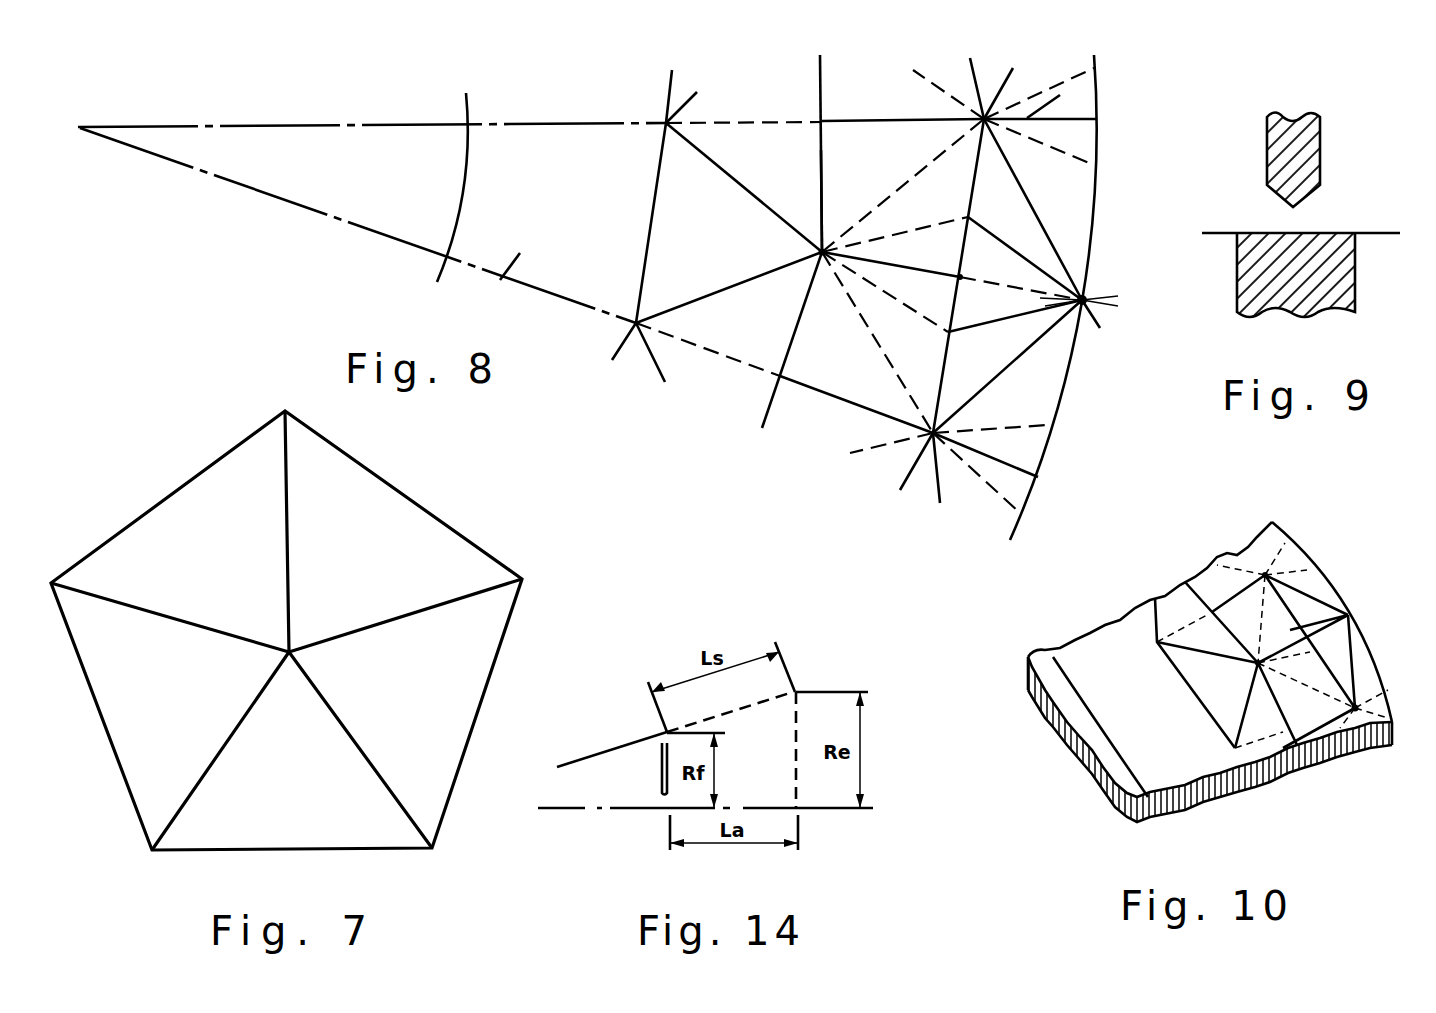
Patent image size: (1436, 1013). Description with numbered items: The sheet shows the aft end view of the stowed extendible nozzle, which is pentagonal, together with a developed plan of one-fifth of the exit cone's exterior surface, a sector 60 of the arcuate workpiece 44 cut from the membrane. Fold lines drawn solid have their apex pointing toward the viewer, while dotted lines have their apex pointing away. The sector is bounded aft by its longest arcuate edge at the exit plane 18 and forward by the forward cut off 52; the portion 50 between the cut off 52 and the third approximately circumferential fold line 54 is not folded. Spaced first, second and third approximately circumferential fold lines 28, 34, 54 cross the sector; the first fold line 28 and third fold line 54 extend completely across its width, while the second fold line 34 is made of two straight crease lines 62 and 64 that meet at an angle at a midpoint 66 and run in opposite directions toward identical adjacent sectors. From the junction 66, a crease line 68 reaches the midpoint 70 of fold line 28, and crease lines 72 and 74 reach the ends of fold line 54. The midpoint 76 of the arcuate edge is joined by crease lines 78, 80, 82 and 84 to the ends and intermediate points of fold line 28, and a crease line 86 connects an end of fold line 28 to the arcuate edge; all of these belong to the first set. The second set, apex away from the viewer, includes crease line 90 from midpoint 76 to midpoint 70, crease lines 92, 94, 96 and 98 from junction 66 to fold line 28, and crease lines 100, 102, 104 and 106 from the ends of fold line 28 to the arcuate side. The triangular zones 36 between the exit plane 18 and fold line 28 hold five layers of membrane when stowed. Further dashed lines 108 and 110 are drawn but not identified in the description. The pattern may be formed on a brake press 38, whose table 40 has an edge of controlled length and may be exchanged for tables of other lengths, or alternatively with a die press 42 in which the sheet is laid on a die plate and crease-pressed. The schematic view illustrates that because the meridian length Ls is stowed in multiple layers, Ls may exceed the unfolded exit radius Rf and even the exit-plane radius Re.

In FIG. 8, the exit plane 18 is at (1100, 228).
In FIG. 8, the first approximately circumferential fold line 28 is at (968, 74).
In FIG. 8, the second approximately circumferential fold line 34 is at (822, 180).
In FIG. 8, the triangular zones 36 is at (1096, 308).
In FIG. 8, the brake press 38 is at (1053, 103).
In FIG. 9, the brake press 38 is at (1248, 216).
In FIG. 9, the table 40 is at (1345, 282).
In FIG. 10, the die press 42 is at (1125, 597).
In FIG. 9, the workpiece 44 is at (1368, 233).
In FIG. 10, the workpiece 44 is at (1213, 583).
In FIG. 8, the unfolded portion of cone 50 is at (358, 225).
In FIG. 8, the forward cut off 52 is at (462, 190).
In FIG. 8, the third approximately circumferential fold line 54 is at (657, 94).
In FIG. 8, the sector 60 is at (680, 398).
In FIG. 8, the crease line 62 is at (820, 157).
In FIG. 8, the crease line 64 is at (795, 327).
In FIG. 8, the midpoint (junction) 66 is at (816, 252).
In FIG. 8, the crease line 68 is at (888, 266).
In FIG. 8, the midpoint of first fold line 70 is at (963, 274).
In FIG. 8, the crease line 72 is at (757, 199).
In FIG. 8, the crease line 74 is at (697, 92).
In FIG. 8, the midpoint of longest arcuate line 76 is at (1097, 326).
In FIG. 8, the crease line 78 is at (1008, 368).
In FIG. 8, the crease line 80 is at (1007, 76).
In FIG. 8, the crease line 82 is at (987, 325).
In FIG. 8, the crease line 84 is at (1000, 238).
In FIG. 8, the crease line 86 is at (980, 453).
In FIG. 8, the crease line 90 is at (1018, 292).
In FIG. 8, the crease line 92 is at (880, 350).
In FIG. 8, the crease line 94 is at (950, 97).
In FIG. 8, the crease line 96 is at (880, 285).
In FIG. 8, the crease line 98 is at (947, 222).
In FIG. 8, the crease line 100 is at (993, 493).
In FIG. 8, the crease line 102 is at (1000, 431).
In FIG. 8, the crease line 104 is at (1041, 144).
In FIG. 8, the crease line 106 is at (1050, 90).
In FIG. 8, the dashed line 108 is at (772, 119).
In FIG. 8, the dashed line 110 is at (732, 374).